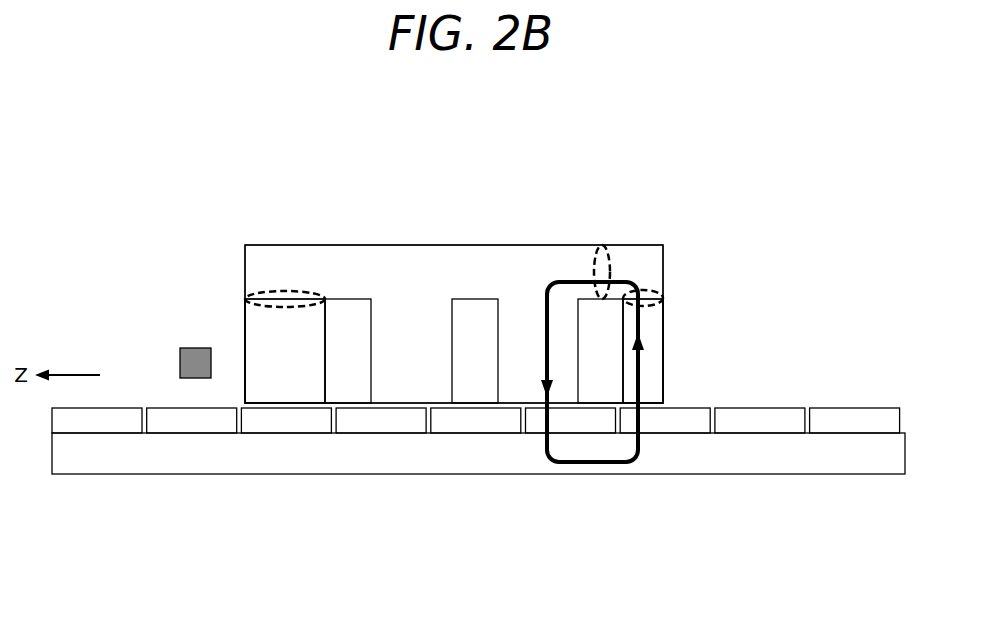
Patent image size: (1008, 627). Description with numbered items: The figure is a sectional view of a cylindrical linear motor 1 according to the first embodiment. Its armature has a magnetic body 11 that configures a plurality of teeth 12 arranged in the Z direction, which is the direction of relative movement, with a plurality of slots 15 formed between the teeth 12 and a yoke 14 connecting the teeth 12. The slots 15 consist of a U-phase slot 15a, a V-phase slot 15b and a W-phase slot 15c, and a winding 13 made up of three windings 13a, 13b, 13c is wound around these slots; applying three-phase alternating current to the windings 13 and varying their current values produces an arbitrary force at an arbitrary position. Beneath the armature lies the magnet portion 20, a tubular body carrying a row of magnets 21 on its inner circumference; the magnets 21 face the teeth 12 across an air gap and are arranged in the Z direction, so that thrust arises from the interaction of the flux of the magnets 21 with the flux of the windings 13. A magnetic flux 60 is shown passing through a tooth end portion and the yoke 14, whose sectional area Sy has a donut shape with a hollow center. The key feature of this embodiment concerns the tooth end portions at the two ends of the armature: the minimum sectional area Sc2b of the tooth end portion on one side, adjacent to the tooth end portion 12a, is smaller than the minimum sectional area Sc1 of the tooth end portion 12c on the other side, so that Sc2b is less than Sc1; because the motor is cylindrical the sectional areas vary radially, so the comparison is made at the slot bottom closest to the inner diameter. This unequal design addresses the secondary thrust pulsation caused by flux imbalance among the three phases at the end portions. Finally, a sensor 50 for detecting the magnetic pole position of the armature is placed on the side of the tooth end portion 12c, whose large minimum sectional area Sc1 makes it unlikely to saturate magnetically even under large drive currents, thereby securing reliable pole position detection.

The electronic device / module 1 is at (290, 130).
The magnetic body 11 is at (266, 246).
The teeth 12 is at (525, 362).
The tooth end portion 12a is at (653, 327).
The tooth end portion 12c is at (257, 328).
The winding 13 is at (362, 525).
The winding 13a is at (347, 383).
The winding 13b is at (468, 380).
The winding 13c is at (600, 382).
The yoke 14 is at (643, 256).
The slots 15 is at (565, 177).
The U-phase slot 15a is at (352, 299).
The V-phase slot 15b is at (472, 299).
The W-phase slot 15c is at (600, 299).
The magnet portion 20 is at (792, 452).
The magnets 21 is at (687, 420).
The sensor 50 is at (182, 363).
The magnetic flux 60 is at (638, 386).
The minimum sectional area Sc1 is at (263, 293).
The minimum sectional area Sc2b is at (663, 300).
The sectional area of the yoke Sy is at (608, 245).